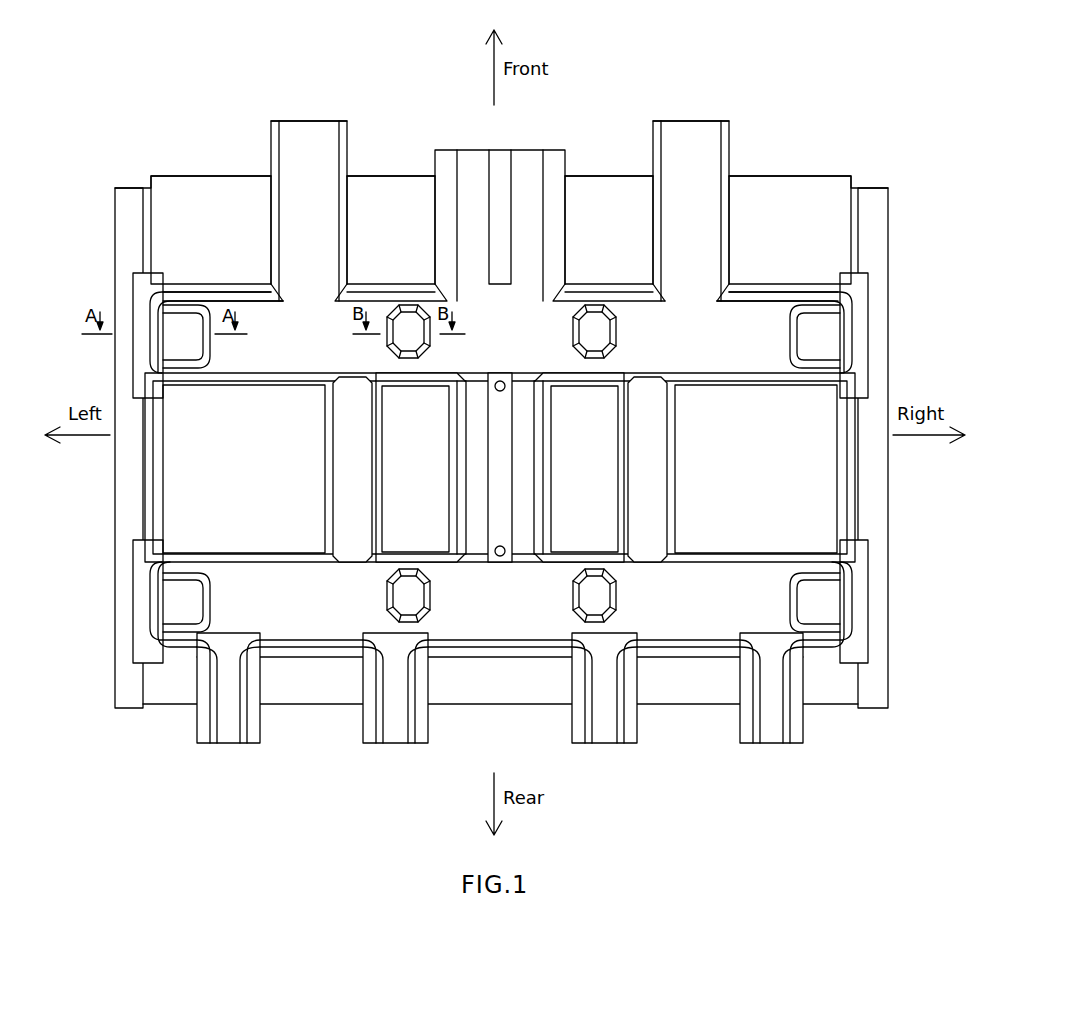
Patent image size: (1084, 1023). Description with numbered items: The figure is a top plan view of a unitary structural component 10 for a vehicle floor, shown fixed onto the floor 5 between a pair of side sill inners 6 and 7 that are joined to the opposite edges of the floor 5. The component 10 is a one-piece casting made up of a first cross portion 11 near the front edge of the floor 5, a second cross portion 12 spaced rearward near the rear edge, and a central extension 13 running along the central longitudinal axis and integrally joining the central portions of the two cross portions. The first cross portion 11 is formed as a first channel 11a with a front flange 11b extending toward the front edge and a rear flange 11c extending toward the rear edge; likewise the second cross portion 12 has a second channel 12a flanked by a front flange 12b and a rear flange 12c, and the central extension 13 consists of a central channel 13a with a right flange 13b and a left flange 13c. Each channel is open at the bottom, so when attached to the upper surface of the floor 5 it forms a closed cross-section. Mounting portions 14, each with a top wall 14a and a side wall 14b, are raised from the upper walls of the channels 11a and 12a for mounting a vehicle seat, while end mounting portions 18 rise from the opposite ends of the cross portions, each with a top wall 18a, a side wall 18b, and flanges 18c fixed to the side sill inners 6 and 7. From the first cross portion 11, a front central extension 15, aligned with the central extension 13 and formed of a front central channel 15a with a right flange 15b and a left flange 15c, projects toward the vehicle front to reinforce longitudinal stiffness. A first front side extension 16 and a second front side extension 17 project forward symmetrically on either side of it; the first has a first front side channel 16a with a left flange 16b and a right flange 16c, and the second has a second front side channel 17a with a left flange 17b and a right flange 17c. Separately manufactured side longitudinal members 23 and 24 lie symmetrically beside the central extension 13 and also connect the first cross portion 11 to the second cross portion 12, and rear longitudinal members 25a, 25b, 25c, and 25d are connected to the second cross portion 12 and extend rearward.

The floor 5 is at (790, 185).
The side sill inner 6 is at (118, 478).
The side sill inner 7 is at (882, 483).
The unitary structural component 10 is at (262, 212).
The first cross portion 11 is at (413, 274).
The first channel 11a is at (641, 308).
The front flange 11b is at (222, 284).
The rear flange 11c is at (293, 385).
The second cross portion 12 is at (453, 675).
The second channel 12a is at (552, 632).
The front flange 12b is at (245, 552).
The rear flange 12c is at (332, 653).
The central extension 13 is at (561, 468).
The central channel 13a is at (525, 455).
The right flange 13b is at (453, 483).
The left flange 13c is at (547, 500).
The mounting portion 14 is at (376, 343).
The top wall 14a is at (405, 338).
The side wall 14b is at (432, 336).
The front central extension 15 is at (491, 130).
The front central channel 15a is at (524, 160).
The right flange 15b is at (435, 168).
The left flange 15c is at (567, 168).
The first front side extension 16 is at (318, 108).
The first front side channel 16a is at (300, 128).
The left flange 16b is at (273, 143).
The right flange 16c is at (346, 143).
The second front side extension 17 is at (688, 104).
The second front side channel 17a is at (700, 130).
The left flange 17b is at (655, 140).
The right flange 17c is at (732, 147).
The end mounting portion 18 is at (224, 345).
The top wall 18a is at (198, 350).
The side wall 18b is at (790, 355).
The flange 18c is at (137, 367).
The side longitudinal member 23 is at (310, 455).
The side longitudinal member 24 is at (692, 480).
The rear longitudinal member 25a is at (232, 755).
The rear longitudinal member 25b is at (390, 755).
The rear longitudinal member 25c is at (603, 755).
The rear longitudinal member 25d is at (766, 755).